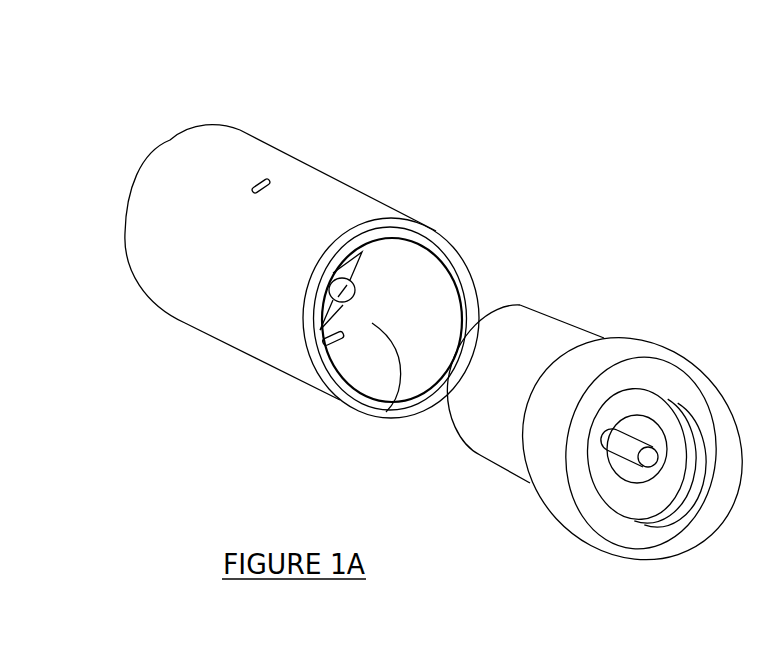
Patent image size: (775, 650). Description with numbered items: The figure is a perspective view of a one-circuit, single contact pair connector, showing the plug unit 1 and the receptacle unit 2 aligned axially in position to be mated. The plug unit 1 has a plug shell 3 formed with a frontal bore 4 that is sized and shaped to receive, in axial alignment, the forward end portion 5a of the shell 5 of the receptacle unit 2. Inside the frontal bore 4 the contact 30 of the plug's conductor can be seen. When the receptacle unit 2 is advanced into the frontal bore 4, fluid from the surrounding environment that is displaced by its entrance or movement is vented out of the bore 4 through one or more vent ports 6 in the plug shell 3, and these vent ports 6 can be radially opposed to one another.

The plug unit 1 is at (325, 132).
The receptacle unit 2 is at (638, 310).
The plug shell 3 is at (223, 298).
The frontal bore 4 is at (398, 386).
The shell 5 is at (613, 360).
The forward end portion 5a is at (497, 435).
The vent ports 6 is at (265, 176).
The contact 30 is at (363, 255).